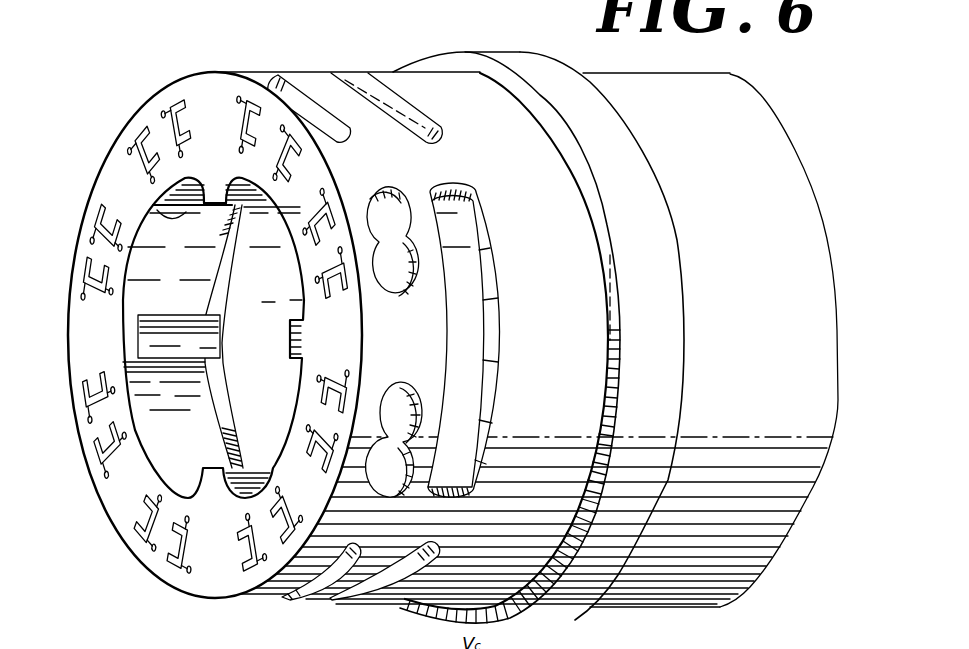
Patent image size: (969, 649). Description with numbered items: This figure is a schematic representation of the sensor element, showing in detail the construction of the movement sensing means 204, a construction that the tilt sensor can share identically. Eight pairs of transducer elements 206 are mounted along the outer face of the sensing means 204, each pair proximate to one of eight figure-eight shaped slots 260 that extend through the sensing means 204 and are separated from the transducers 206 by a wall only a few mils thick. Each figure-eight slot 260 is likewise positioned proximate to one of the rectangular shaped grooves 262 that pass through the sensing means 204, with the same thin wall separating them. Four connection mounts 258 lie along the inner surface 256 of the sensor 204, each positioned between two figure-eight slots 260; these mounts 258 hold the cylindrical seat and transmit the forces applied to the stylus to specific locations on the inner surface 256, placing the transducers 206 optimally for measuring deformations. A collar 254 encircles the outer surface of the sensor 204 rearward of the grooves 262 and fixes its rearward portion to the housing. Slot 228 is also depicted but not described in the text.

The movement sensing means 204 is at (262, 47).
The transducer elements 206 is at (167, 560).
The circumferential slot 228 is at (389, 600).
The collar 254 is at (643, 204).
The inner surface 256 is at (152, 222).
The connection mounts 258 is at (128, 333).
The figure-eight shaped slots 260 is at (384, 193).
The grooves 262 is at (487, 397).